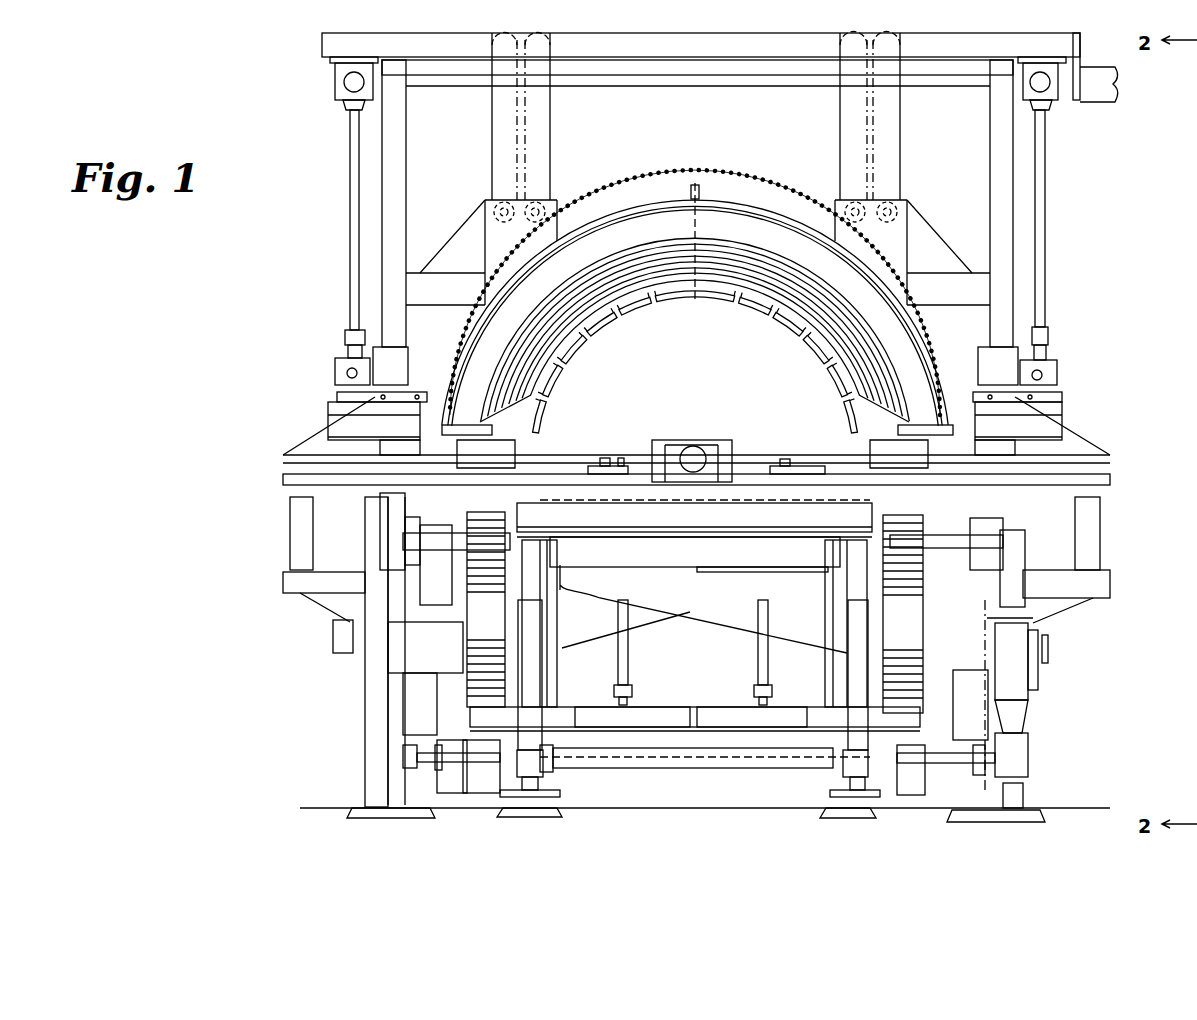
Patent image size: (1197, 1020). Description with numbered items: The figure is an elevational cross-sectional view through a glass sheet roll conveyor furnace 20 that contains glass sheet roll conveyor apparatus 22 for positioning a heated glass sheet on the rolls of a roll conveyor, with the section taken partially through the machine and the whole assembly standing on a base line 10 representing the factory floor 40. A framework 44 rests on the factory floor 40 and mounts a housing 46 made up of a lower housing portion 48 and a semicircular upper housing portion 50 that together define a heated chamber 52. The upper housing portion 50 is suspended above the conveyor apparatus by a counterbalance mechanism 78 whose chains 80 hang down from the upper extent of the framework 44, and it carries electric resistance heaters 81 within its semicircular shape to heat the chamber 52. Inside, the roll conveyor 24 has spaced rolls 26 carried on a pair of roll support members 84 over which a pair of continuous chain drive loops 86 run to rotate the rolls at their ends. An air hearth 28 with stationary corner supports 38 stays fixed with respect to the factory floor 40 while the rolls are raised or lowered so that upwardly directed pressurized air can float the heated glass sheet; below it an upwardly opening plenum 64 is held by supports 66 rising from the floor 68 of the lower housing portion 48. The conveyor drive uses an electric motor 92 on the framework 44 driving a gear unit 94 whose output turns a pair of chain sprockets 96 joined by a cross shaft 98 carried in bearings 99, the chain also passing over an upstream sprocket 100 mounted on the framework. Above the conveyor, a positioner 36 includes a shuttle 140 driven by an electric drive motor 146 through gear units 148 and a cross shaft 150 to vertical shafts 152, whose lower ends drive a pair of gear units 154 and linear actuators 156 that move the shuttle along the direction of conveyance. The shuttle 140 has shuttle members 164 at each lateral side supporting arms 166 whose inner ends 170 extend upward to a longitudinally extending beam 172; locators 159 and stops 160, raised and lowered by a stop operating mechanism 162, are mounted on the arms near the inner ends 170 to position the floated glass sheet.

The base plate 10 is at (696, 449).
The furnace 20 is at (1092, 260).
The glass sheet roll conveyor apparatus 22 is at (847, 440).
The roll conveyor 24 is at (1090, 488).
The rolls 26 is at (540, 470).
The air hearth 28 is at (680, 540).
The positioner 36 is at (746, 445).
The stationary corner supports 38 is at (558, 632).
The factory floor 40 is at (648, 806).
The framework 44 is at (353, 742).
The housing 46 is at (420, 378).
The lower housing portion 48 is at (400, 690).
The upper housing portion 50 is at (458, 364).
The heated chamber 52 is at (670, 312).
The plenum 64 is at (744, 555).
The supports 66 is at (758, 642).
The floor 68 is at (672, 708).
The counterbalance mechanism 78 is at (481, 152).
The chains 80 is at (552, 130).
The electric resistance heaters 81 is at (565, 318).
The roll support members 84 is at (398, 543).
The continuous drive loops 86 is at (385, 650).
The electric motor 92 is at (1022, 680).
The gear unit 94 is at (1030, 745).
The chain sprockets 96 is at (400, 755).
The cross shaft 98 is at (470, 792).
The bearings 99 is at (445, 790).
The upstream sprocket 100 is at (395, 552).
The shuttle 140 is at (1040, 405).
The electric drive motor 146 is at (1120, 82).
The gear units 148 is at (1066, 96).
The cross shaft 150 is at (733, 88).
The vertical shafts 152 is at (350, 236).
The gear units 154 is at (340, 362).
The linear actuators 156 is at (370, 372).
The locator 159 is at (606, 466).
The stops 160 is at (775, 484).
The stop operating mechanism 162 is at (812, 464).
The shuttle members 164 is at (378, 438).
The arms 166 is at (697, 446).
The inner ends 170 is at (680, 446).
The beam 172 is at (706, 447).